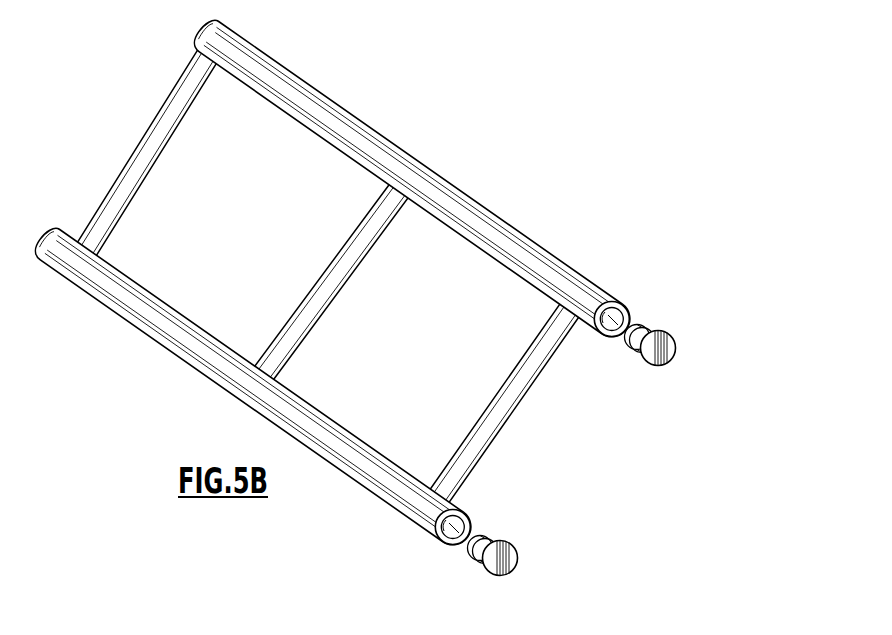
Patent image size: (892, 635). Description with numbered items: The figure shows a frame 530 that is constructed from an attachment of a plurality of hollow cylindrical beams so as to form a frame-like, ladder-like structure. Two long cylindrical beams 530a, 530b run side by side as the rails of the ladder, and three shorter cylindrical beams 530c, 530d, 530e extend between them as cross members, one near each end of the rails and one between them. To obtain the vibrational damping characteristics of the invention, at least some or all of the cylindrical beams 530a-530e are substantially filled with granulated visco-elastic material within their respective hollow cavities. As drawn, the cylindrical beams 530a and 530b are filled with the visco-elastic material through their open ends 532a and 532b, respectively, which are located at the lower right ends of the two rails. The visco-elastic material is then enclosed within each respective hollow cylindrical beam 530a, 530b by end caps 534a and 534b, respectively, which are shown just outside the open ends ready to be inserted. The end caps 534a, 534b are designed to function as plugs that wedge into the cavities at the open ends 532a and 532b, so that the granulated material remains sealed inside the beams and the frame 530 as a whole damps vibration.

The frame 530 is at (352, 76).
The cylindrical beam 530a is at (188, 343).
The cylindrical beam 530b is at (478, 218).
The cylindrical beam 530c is at (515, 405).
The cylindrical beam 530d is at (340, 283).
The cylindrical beam 530e is at (163, 157).
The open end 532a is at (441, 530).
The open end 532b is at (616, 306).
The end cap 534a is at (516, 560).
The end cap 534b is at (672, 348).